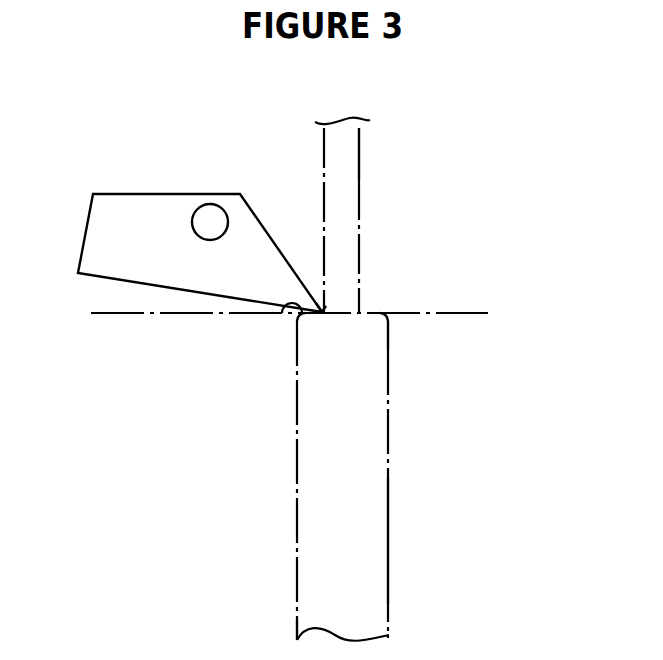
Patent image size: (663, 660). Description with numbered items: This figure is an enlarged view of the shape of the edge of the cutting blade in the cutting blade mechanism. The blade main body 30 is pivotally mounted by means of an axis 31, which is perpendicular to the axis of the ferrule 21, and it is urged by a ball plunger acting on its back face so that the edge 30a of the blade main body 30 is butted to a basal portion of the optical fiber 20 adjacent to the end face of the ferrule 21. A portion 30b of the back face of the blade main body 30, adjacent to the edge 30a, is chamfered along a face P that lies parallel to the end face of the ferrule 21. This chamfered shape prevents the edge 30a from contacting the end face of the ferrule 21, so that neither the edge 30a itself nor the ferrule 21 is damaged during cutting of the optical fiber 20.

The optical fiber 20 is at (359, 180).
The ferrule 21 is at (388, 478).
The blade main body 30 is at (148, 210).
The edge 30a is at (323, 312).
The portion adjacent to the edge 30b is at (280, 311).
The axis 31 is at (210, 222).
The face P is at (463, 313).